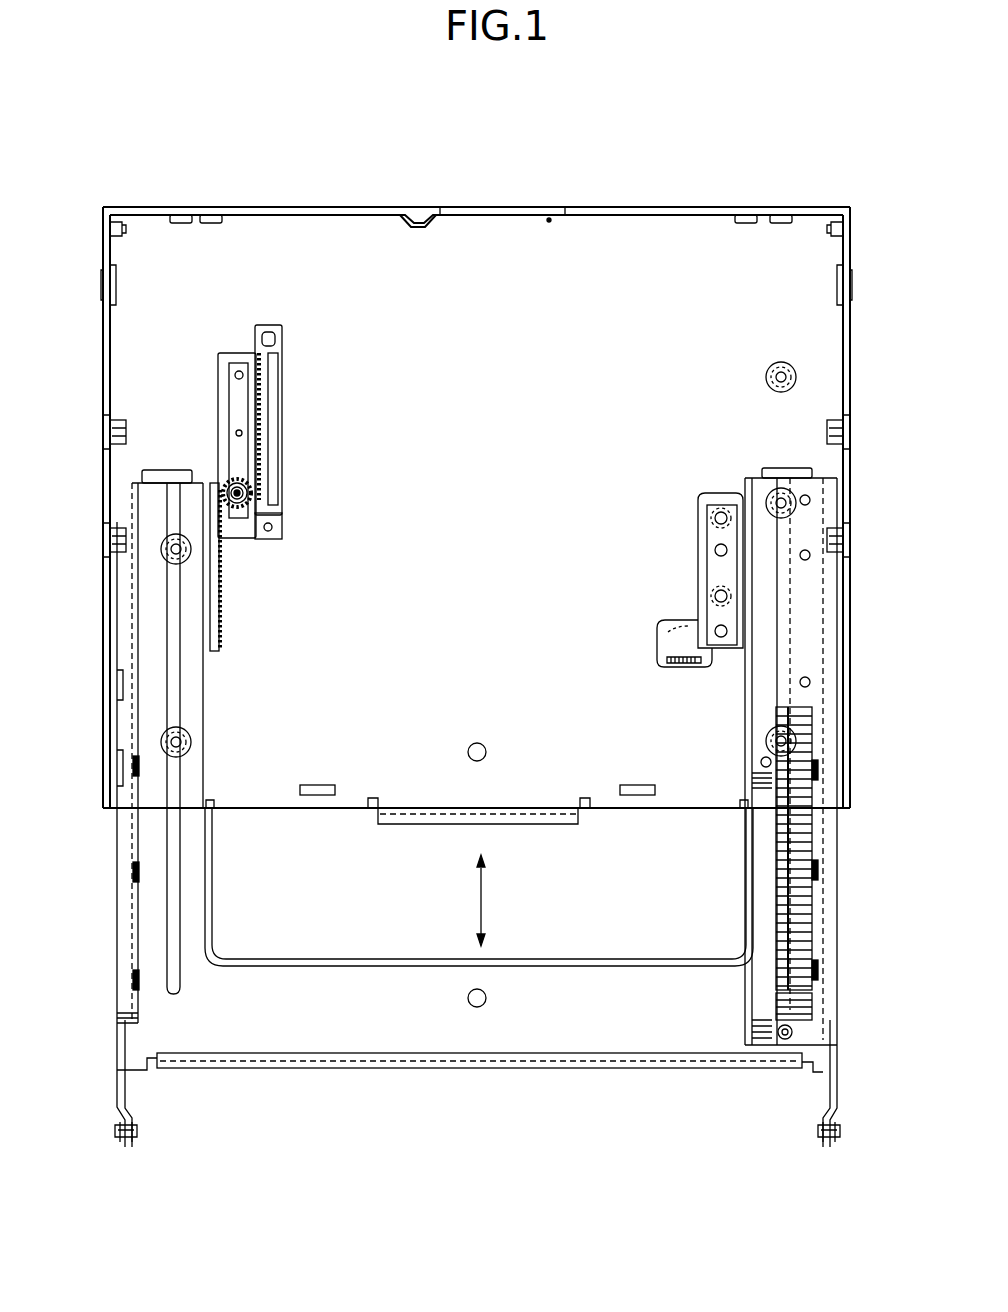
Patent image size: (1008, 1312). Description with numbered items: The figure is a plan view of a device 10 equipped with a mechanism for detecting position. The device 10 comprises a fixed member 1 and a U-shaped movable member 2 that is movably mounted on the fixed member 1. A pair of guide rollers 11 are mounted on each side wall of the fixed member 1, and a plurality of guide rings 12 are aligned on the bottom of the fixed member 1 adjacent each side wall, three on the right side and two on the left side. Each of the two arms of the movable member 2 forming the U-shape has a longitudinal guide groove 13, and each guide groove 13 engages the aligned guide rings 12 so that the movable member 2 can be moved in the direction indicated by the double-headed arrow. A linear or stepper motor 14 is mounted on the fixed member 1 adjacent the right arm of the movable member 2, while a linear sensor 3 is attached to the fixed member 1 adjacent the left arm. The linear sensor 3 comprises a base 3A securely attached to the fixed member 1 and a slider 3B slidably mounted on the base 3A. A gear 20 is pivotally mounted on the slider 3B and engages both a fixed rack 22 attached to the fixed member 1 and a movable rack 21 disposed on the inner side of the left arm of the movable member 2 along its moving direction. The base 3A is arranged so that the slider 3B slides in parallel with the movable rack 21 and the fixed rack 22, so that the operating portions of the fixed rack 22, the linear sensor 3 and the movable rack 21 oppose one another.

The fixed member 1 is at (295, 250).
The device 10 is at (586, 193).
The movable member 2 is at (375, 1050).
The linear sensor 3 is at (221, 440).
The base 3A is at (235, 395).
The slider 3B is at (240, 520).
The guide rollers 11 is at (110, 430).
The guide rings 12 is at (797, 378).
The guide groove 13 is at (165, 918).
The linear or stepper motor 14 is at (700, 565).
The gear 20 is at (252, 493).
The movable rack 21 is at (225, 622).
The fixed rack 22 is at (268, 338).